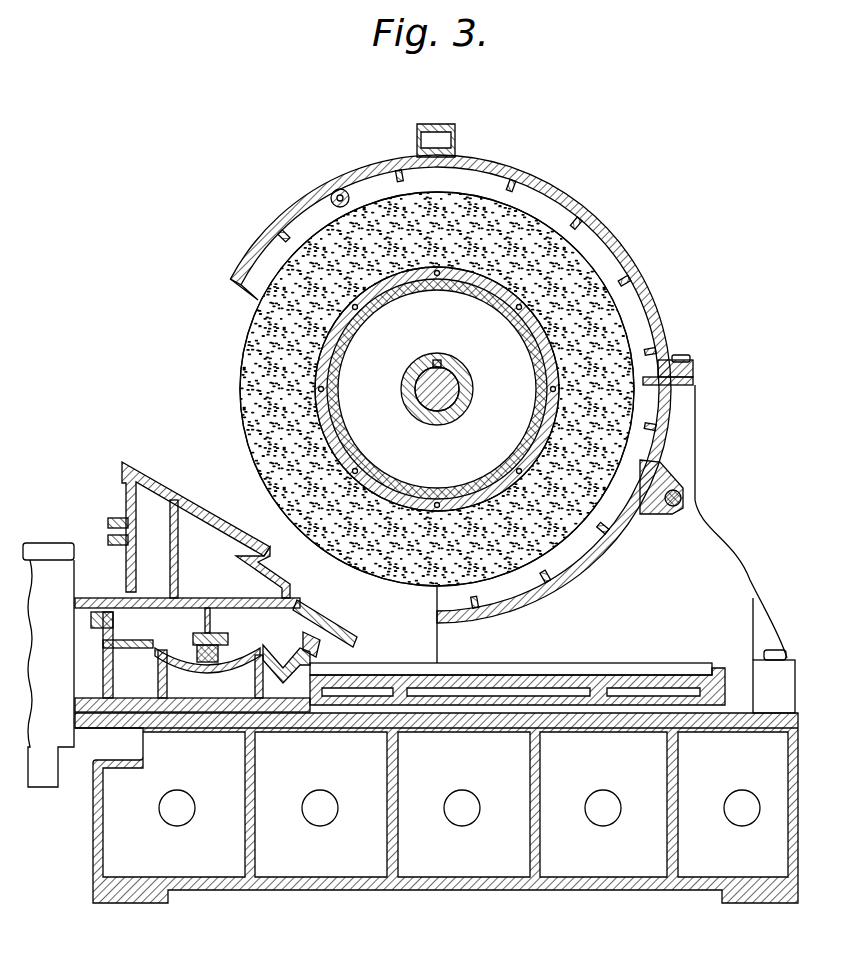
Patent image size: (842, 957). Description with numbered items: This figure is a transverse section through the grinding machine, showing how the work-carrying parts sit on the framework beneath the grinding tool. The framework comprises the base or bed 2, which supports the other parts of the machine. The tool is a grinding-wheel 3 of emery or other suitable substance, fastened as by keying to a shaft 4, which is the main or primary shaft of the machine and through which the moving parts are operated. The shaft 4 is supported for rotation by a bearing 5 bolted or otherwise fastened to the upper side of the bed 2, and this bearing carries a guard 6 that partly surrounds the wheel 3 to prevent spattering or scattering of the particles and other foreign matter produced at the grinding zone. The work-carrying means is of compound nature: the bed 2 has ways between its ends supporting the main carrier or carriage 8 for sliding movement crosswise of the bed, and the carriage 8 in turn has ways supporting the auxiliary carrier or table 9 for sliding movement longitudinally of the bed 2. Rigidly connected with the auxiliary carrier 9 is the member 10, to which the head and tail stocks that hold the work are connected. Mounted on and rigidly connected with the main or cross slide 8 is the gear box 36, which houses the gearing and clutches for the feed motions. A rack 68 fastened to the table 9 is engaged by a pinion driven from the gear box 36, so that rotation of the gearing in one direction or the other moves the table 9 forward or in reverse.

The base or bed 2 is at (393, 892).
The grinding-wheel 3 is at (243, 352).
The shaft 4 is at (478, 384).
The bearing 5 is at (735, 546).
The guard 6 is at (655, 300).
The main carrier or carriage 8 is at (725, 688).
The auxiliary carrier or table 9 is at (328, 628).
The member 10 is at (125, 489).
The gear box 36 is at (40, 790).
The rack 68 is at (195, 652).